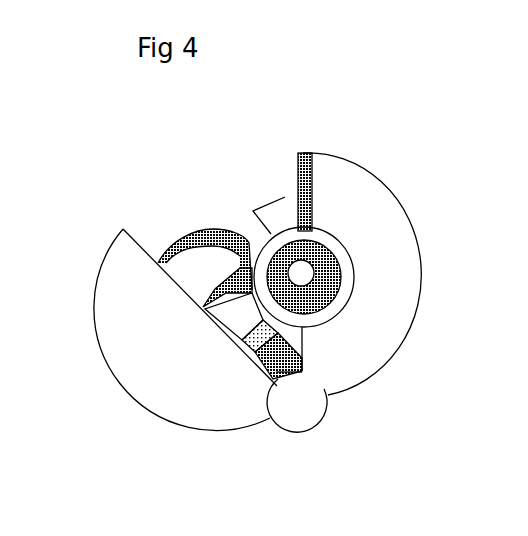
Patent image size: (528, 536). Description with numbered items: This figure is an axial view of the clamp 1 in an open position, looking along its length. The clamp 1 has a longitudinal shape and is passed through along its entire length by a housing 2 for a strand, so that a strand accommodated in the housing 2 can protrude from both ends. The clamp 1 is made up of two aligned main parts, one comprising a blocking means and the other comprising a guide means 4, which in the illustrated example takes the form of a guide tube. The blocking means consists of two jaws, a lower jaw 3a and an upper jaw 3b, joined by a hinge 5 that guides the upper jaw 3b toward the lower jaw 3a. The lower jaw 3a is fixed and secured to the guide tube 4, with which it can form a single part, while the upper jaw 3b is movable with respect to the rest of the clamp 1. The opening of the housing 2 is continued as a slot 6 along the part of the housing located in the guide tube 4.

The clamp 1 is at (159, 182).
The housing 2 is at (298, 276).
The lower jaw 3a is at (398, 285).
The upper jaw 3b is at (150, 362).
The guide means 4 is at (323, 307).
The hinge 5 is at (296, 398).
The slot 6 is at (295, 230).